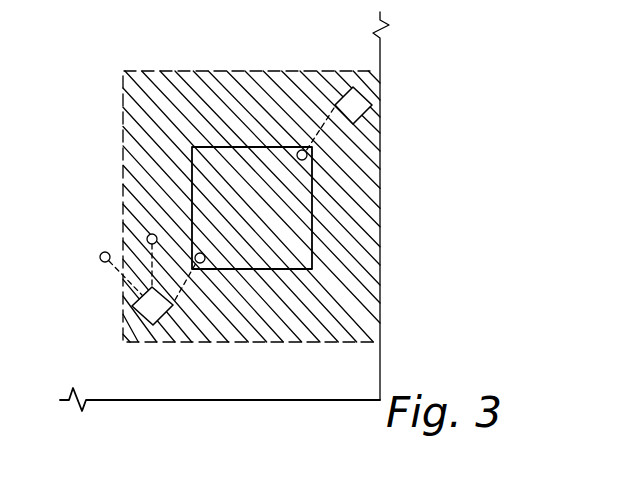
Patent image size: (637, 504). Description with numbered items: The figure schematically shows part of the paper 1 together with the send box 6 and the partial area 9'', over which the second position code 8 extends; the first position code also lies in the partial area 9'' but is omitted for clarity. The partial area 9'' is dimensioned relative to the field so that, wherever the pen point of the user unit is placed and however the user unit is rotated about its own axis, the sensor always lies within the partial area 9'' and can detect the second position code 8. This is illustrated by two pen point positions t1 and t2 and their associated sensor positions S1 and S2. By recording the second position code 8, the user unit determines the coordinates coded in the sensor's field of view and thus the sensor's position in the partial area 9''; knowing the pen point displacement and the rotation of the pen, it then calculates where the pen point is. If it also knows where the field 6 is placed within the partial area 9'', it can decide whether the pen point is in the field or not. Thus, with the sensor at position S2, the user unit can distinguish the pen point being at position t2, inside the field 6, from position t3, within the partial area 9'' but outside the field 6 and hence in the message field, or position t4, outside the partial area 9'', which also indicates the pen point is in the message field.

The paper 1 is at (267, 400).
The send box 6 is at (312, 200).
The second position code 8 is at (223, 112).
The partial area 9'' is at (216, 198).
The sensor position S1 is at (372, 105).
The sensor position S2 is at (153, 325).
The pen point position t1 is at (307, 156).
The pen point position t2 is at (204, 262).
The pen point position t3 is at (148, 235).
The pen point position t4 is at (102, 252).